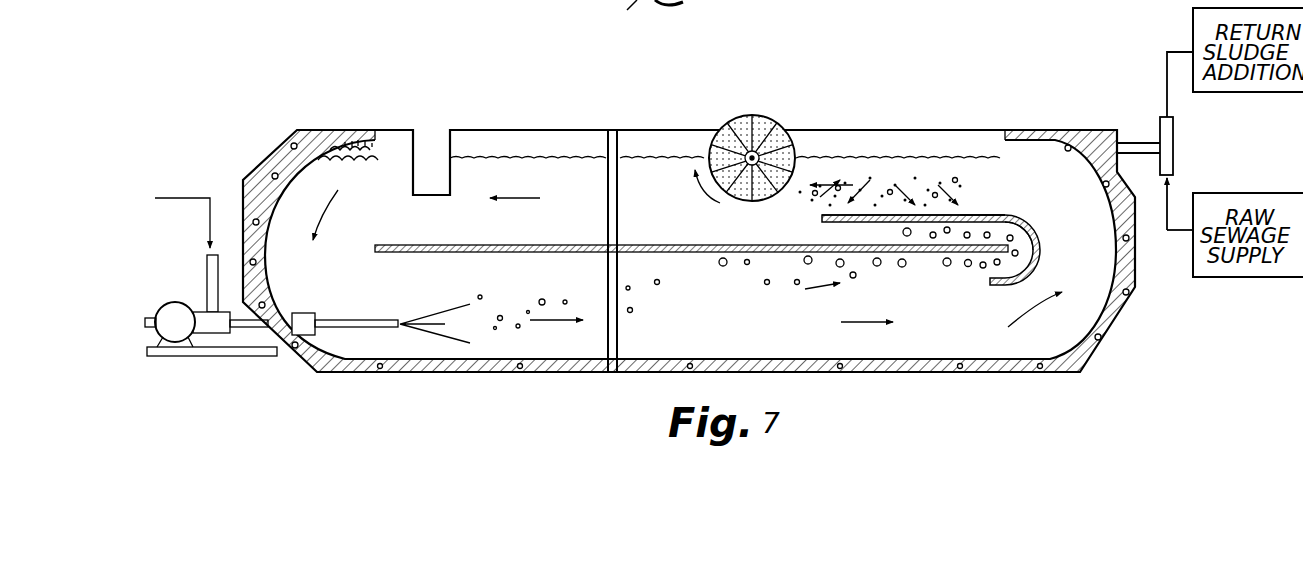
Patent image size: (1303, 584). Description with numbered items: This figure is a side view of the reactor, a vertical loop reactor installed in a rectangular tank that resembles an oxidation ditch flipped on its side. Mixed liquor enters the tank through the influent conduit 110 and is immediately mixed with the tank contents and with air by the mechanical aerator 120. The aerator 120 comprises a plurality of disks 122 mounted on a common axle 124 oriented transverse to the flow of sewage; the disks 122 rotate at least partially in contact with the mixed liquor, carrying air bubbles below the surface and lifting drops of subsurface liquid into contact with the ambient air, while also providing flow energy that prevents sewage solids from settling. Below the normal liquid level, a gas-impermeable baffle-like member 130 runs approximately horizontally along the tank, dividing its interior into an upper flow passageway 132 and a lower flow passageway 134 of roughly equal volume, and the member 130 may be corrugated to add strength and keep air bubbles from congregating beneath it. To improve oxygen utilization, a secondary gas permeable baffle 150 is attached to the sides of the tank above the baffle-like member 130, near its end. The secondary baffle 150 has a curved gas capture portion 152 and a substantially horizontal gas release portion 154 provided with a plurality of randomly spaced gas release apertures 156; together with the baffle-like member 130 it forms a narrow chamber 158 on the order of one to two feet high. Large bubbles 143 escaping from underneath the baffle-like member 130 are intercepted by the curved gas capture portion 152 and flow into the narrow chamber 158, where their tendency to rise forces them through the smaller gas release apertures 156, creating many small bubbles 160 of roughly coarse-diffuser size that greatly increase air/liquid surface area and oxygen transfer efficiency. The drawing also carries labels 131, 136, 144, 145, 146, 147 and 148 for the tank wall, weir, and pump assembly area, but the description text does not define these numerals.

The influent conduit 110 is at (500, 385).
The mechanical aerator 120 is at (759, 102).
The disks 122 is at (725, 118).
The common axle 124 is at (765, 117).
The baffle-like member 130 is at (550, 252).
The tank wall 131 is at (272, 163).
The upper flow passageway 132 is at (678, 215).
The lower flow passageway 134 is at (748, 322).
The outlet weir 136 is at (421, 150).
The large bubbles 143 is at (946, 266).
The pump base plate 144 is at (255, 356).
The pump support 145 is at (174, 343).
The air inlet pipe 146 is at (207, 262).
The pump 147 is at (148, 317).
The diffuser pipe 148 is at (378, 312).
The secondary gas permeable baffle 150 is at (911, 226).
The curved gas capture portion 152 is at (1047, 233).
The gas release portion 154 is at (822, 214).
The gas release apertures 156 is at (864, 225).
The narrow chamber 158 is at (968, 216).
The small bubbles 160 is at (965, 167).